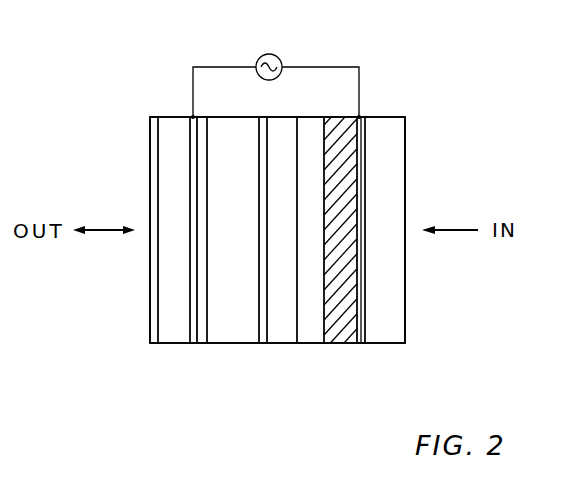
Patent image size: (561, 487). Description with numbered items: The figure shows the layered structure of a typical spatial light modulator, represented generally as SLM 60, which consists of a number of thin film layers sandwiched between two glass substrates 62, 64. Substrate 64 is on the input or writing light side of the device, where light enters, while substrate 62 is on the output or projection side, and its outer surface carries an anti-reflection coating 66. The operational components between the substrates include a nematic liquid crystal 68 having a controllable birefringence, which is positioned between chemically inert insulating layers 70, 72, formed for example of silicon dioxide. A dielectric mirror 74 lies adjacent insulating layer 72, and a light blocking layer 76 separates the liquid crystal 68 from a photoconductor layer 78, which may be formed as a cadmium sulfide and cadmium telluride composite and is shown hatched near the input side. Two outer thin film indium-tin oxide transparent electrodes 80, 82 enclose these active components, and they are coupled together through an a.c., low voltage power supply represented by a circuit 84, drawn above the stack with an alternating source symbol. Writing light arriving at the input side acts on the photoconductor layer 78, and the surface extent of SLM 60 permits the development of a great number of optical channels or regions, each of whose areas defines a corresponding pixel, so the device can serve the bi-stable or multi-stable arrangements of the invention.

The SLM 60 is at (422, 64).
The glass substrate 62 is at (179, 117).
The glass substrate 64 is at (402, 142).
The anti-reflection coating 66 is at (150, 131).
The nematic liquid crystal 68 is at (248, 332).
The insulating layer 70 is at (203, 117).
The insulating layer 72 is at (264, 117).
The dielectric mirror 74 is at (284, 323).
The light blocking layer 76 is at (303, 130).
The photoconductor layer 78 is at (345, 335).
The transparent electrode 80 is at (362, 117).
The transparent electrode 82 is at (193, 343).
The circuit 84 is at (310, 66).